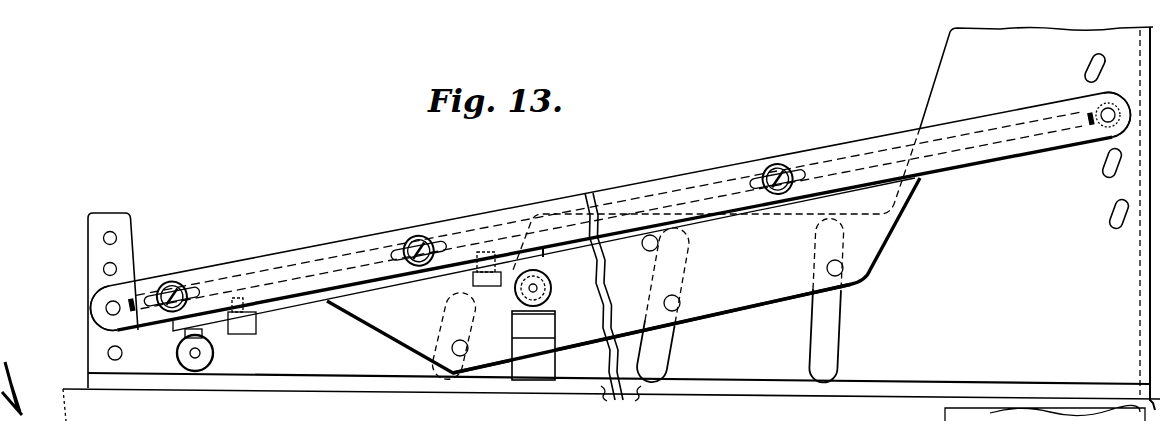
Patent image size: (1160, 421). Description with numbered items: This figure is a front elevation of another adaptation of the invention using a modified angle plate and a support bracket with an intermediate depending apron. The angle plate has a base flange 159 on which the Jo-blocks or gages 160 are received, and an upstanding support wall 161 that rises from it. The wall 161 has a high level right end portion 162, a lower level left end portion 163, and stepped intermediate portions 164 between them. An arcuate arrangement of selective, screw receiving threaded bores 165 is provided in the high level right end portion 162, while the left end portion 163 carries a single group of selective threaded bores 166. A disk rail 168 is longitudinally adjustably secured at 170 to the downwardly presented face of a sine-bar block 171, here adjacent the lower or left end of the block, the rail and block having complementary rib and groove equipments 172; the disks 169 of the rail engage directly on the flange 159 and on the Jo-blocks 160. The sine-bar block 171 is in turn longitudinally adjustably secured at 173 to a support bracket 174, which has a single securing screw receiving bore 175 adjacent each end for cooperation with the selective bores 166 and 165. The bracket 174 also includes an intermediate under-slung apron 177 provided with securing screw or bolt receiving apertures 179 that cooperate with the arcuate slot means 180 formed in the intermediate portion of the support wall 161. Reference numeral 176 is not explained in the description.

The base flange 159 is at (613, 307).
The Jo-blocks or gages 160 is at (545, 275).
The upstanding support wall 161 is at (754, 372).
The high level right end portion 162 is at (944, 74).
The lower level end portion 163 is at (119, 213).
The stepped intermediate portions 164 is at (287, 292).
The screw receiving threaded bores 165 is at (1112, 206).
The screw receiving threaded bores 166 is at (103, 268).
The disk rail 168 is at (362, 297).
The disks 169 is at (138, 355).
The adjustable securing point 170 is at (257, 335).
The sine-bar block 171 is at (365, 244).
The rib and groove equipments 172 is at (306, 293).
The adjustable securing point 173 is at (172, 285).
The support bracket 174 is at (92, 300).
The securing screw receiving bore 175 is at (108, 312).
The bar extension 176 is at (713, 190).
The under-slung apron 177 is at (775, 308).
The securing screw or bolt receiving apertures 179 is at (453, 352).
The arcuate slot means 180 is at (440, 320).